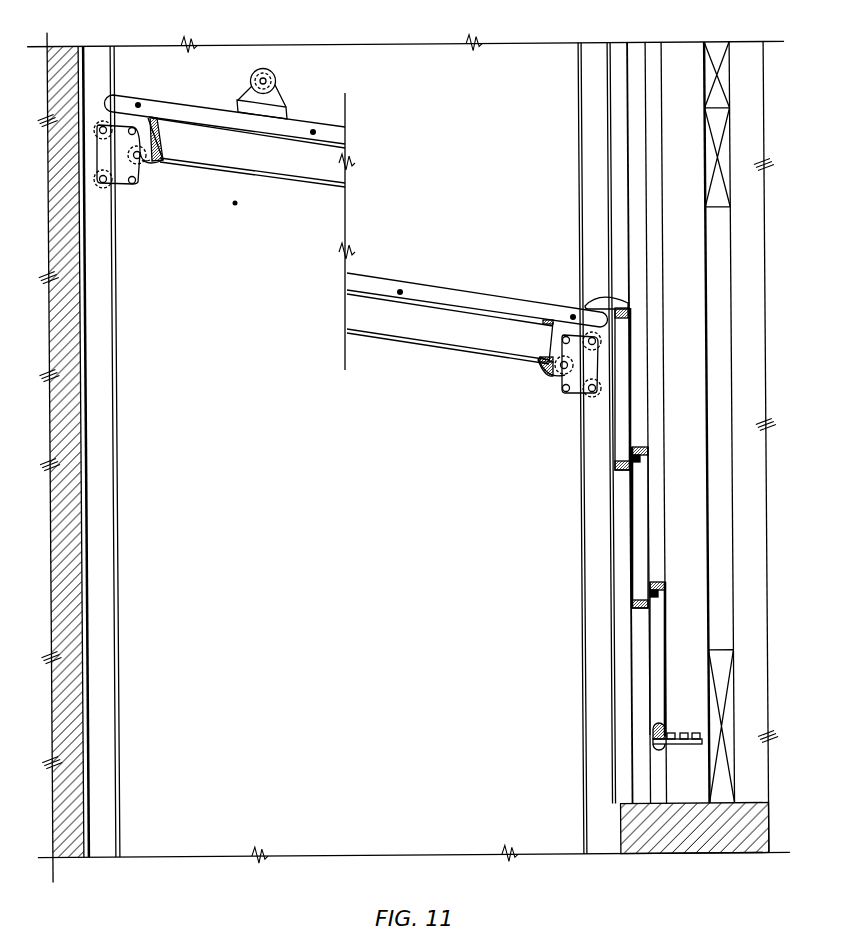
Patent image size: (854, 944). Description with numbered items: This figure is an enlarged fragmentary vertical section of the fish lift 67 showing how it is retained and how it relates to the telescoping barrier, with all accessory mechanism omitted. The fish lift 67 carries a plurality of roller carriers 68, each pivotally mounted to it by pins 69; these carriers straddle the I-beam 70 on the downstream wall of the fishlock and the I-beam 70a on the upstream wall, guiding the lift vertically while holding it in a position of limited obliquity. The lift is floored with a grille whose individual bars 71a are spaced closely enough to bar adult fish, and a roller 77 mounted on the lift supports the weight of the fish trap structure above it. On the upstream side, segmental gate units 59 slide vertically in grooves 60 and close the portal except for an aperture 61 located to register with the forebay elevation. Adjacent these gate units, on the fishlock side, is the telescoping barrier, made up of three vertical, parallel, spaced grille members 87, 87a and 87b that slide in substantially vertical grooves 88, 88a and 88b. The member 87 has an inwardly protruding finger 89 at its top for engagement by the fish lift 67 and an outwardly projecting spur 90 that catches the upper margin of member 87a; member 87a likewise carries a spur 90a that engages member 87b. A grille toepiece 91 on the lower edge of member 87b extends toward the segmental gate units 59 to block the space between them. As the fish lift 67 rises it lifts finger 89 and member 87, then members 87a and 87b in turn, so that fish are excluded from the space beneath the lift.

The segmental gate units 59 is at (718, 129).
The grooves 60 is at (719, 344).
The aperture 61 is at (719, 468).
The fish lift 67 is at (351, 240).
The roller carriers 68 is at (347, 259).
The pins 69 is at (143, 161).
The I-beam 70 is at (103, 451).
The I-beam 70a is at (600, 637).
The bars 71a is at (297, 127).
The roller 77 is at (273, 71).
The grille member 87 is at (623, 393).
The grille member 87a is at (647, 547).
The grille member 87b is at (660, 692).
The groove 88 is at (620, 30).
The groove 88a is at (630, 48).
The groove 88b is at (648, 49).
The finger 89 is at (598, 297).
The spur 90 is at (627, 456).
The spur 90a is at (645, 596).
The grille toepiece 91 is at (679, 745).